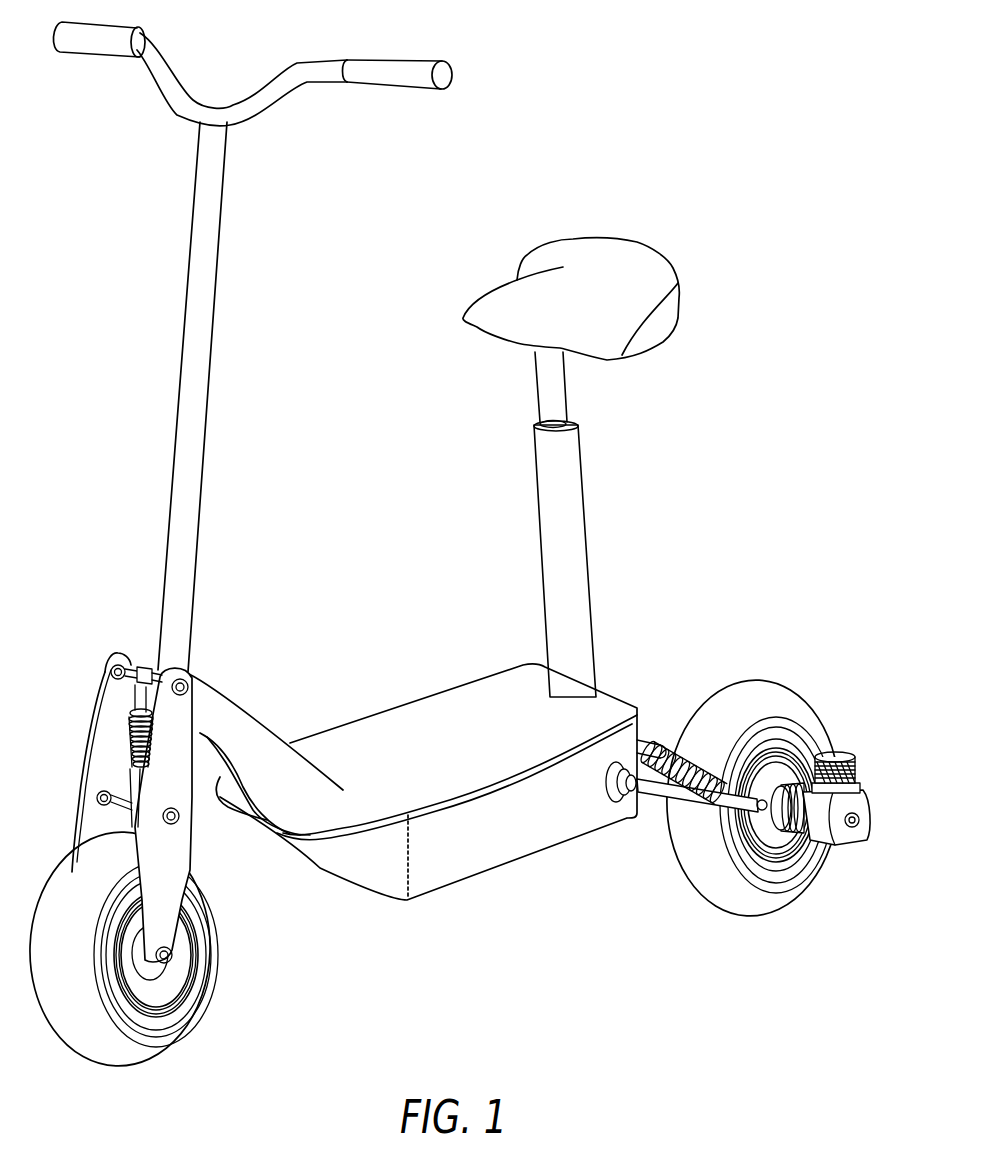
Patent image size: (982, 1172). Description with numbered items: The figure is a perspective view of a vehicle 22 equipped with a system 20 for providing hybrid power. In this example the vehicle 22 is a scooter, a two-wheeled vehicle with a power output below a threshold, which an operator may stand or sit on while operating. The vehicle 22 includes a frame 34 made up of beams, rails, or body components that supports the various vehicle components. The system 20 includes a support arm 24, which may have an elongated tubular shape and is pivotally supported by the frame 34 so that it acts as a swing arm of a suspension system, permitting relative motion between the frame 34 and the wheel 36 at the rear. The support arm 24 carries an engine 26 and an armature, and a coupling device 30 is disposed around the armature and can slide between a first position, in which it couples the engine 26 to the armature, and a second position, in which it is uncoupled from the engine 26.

The system 20 is at (740, 799).
The vehicle 22 is at (457, 545).
The support arm 24 is at (657, 803).
The engine 26 is at (833, 850).
The coupling device 30 is at (793, 838).
The frame 34 is at (482, 855).
The wheel 36 is at (702, 887).